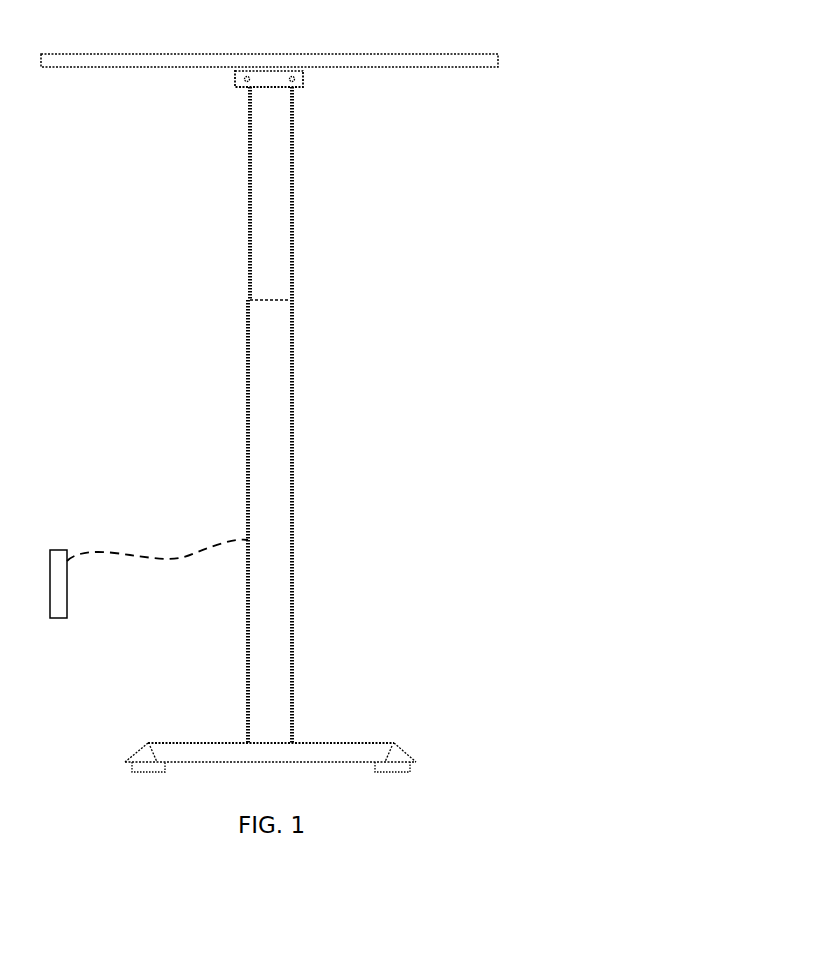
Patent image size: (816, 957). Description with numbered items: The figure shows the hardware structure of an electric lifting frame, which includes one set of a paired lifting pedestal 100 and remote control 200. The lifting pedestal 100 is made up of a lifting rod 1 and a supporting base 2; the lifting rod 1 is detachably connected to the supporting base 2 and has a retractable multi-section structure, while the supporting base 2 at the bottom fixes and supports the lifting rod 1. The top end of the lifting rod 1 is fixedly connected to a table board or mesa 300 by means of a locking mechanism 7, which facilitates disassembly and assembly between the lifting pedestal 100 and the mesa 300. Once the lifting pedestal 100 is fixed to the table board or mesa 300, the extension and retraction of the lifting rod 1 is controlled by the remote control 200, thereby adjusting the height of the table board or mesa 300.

The table board or mesa 300 is at (155, 63).
The locking mechanism 7 is at (302, 73).
The lifting pedestal 100 is at (300, 356).
The lifting rod 1 is at (258, 296).
The remote control 200 is at (55, 583).
The supporting base 2 is at (312, 750).